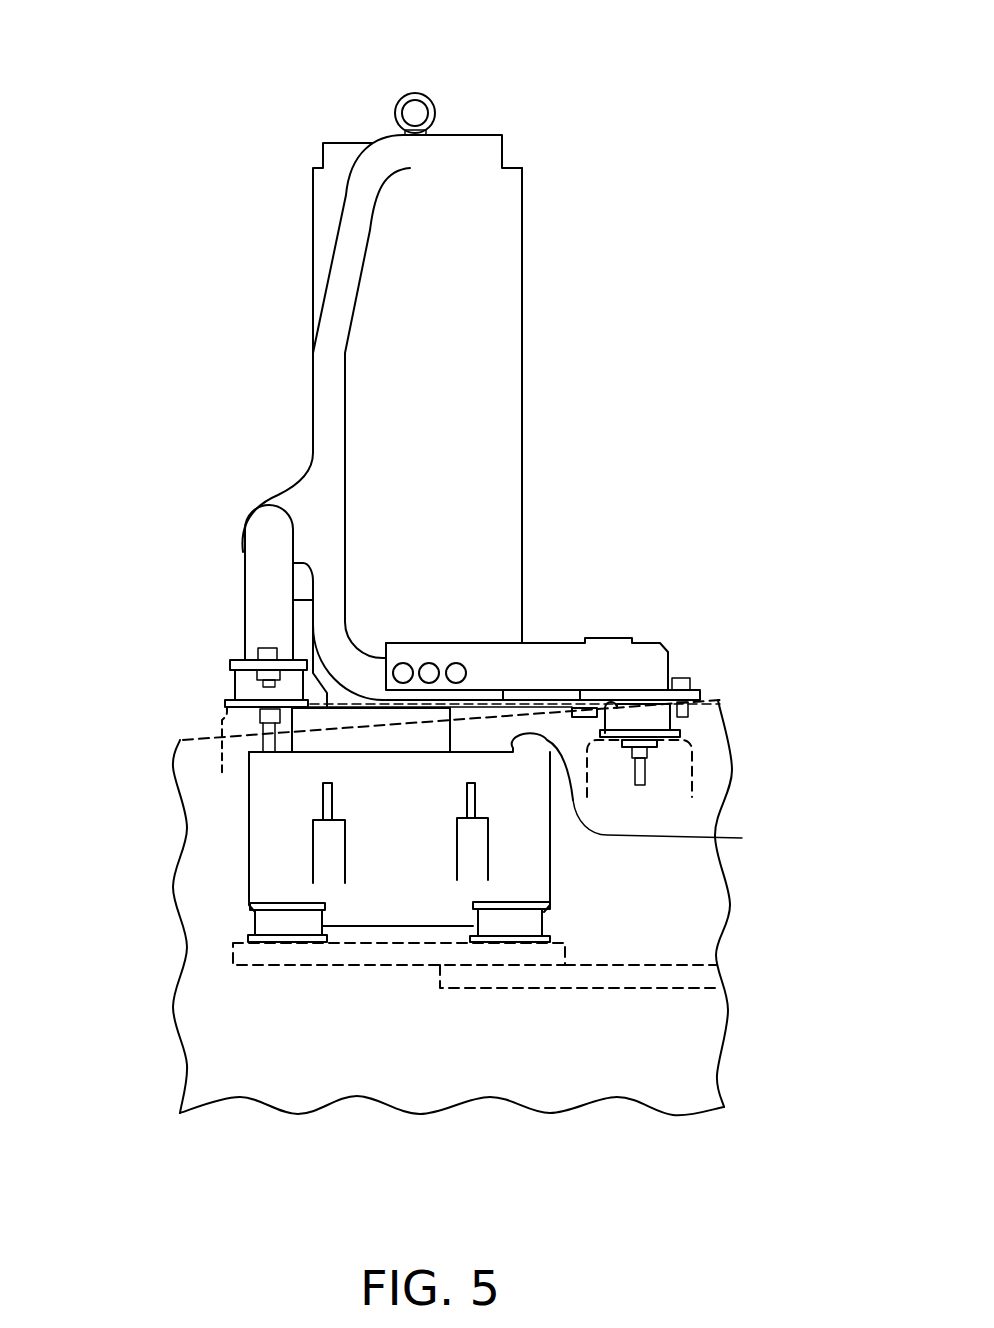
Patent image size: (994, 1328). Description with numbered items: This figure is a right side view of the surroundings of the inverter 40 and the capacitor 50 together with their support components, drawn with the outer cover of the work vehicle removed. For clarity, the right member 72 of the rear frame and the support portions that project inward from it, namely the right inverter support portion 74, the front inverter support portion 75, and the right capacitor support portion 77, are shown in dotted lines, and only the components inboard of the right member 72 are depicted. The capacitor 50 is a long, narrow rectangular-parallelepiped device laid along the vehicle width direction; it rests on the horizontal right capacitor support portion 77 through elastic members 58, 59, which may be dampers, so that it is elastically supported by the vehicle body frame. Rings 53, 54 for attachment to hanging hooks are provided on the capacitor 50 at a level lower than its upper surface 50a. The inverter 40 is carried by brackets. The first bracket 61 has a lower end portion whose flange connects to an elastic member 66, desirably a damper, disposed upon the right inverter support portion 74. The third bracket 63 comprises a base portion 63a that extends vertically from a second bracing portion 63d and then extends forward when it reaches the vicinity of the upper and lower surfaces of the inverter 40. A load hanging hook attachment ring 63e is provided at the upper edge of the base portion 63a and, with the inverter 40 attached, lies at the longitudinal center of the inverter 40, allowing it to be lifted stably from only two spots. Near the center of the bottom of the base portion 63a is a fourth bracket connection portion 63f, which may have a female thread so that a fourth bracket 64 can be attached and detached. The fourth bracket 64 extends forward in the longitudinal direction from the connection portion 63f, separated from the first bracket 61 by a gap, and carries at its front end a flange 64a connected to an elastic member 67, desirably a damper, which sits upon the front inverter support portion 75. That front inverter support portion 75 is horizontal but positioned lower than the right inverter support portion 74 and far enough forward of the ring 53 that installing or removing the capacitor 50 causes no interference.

The inverter 40 is at (482, 263).
The capacitor 50 is at (283, 863).
The upper surface of the capacitor 50a is at (684, 828).
The ring 53 is at (473, 798).
The ring 54 is at (332, 797).
The elastic member 58 is at (523, 922).
The elastic member 59 is at (270, 930).
The first bracket 61 is at (245, 585).
The third bracket 63 is at (478, 134).
The base portion 63a is at (355, 243).
The second bracing portion 63d is at (300, 493).
The load hanging hook attachment ring 63e is at (417, 94).
The fourth bracket connection portion 63f is at (456, 663).
The fourth bracket 64 is at (568, 663).
The flange 64a is at (697, 697).
The elastic member 66 is at (245, 683).
The elastic member 67 is at (653, 720).
The right member 72 is at (205, 738).
The right inverter support portion 74 is at (220, 717).
The front inverter support portion 75 is at (692, 770).
The right capacitor support portion 77 is at (528, 948).